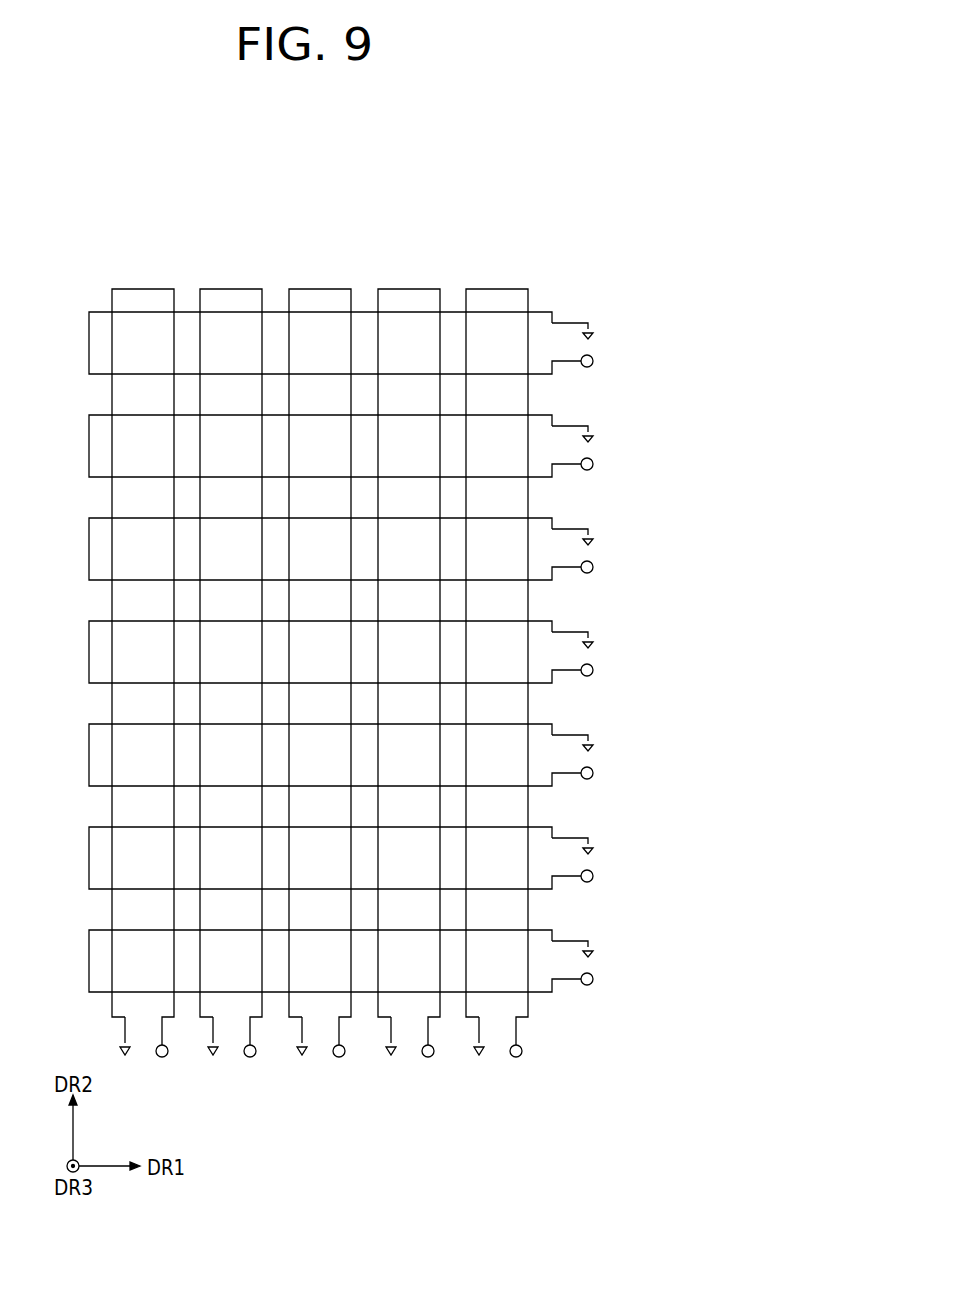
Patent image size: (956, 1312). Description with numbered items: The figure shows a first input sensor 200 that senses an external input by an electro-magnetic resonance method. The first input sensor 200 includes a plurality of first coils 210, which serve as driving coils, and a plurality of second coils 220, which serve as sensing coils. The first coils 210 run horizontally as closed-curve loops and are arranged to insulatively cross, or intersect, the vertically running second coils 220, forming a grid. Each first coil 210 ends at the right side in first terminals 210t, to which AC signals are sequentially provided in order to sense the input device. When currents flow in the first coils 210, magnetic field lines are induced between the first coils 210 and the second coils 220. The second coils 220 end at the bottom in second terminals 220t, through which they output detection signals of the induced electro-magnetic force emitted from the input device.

The first input sensor 200 is at (537, 210).
The first coils 210 is at (540, 312).
The first terminals 210t is at (593, 362).
The second coils 220 is at (530, 395).
The second terminals 220t is at (516, 1058).